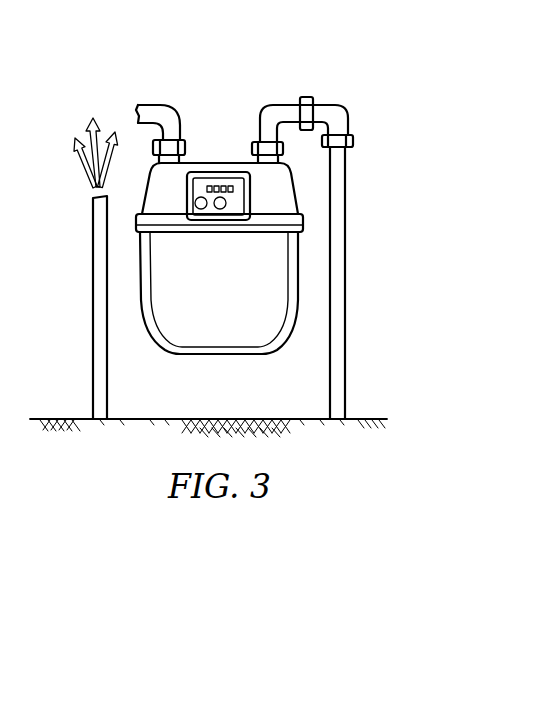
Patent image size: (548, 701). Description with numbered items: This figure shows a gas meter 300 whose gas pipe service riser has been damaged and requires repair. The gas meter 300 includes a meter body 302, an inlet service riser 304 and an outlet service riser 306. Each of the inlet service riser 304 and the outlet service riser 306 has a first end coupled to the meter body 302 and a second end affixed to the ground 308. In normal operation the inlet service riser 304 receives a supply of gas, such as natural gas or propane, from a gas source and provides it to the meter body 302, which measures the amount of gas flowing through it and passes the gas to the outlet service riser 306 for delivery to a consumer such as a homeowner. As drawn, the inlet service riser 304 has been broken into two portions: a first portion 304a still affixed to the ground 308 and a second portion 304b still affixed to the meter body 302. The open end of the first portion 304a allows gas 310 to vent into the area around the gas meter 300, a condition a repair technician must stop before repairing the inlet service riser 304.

The gas meter 300 is at (256, 58).
The meter body 302 is at (220, 163).
The inlet service riser 304 is at (86, 242).
The first portion 304a is at (93, 322).
The second portion 304b is at (153, 104).
The outlet service riser 306 is at (330, 372).
The ground 308 is at (63, 419).
The gas 310 is at (86, 161).